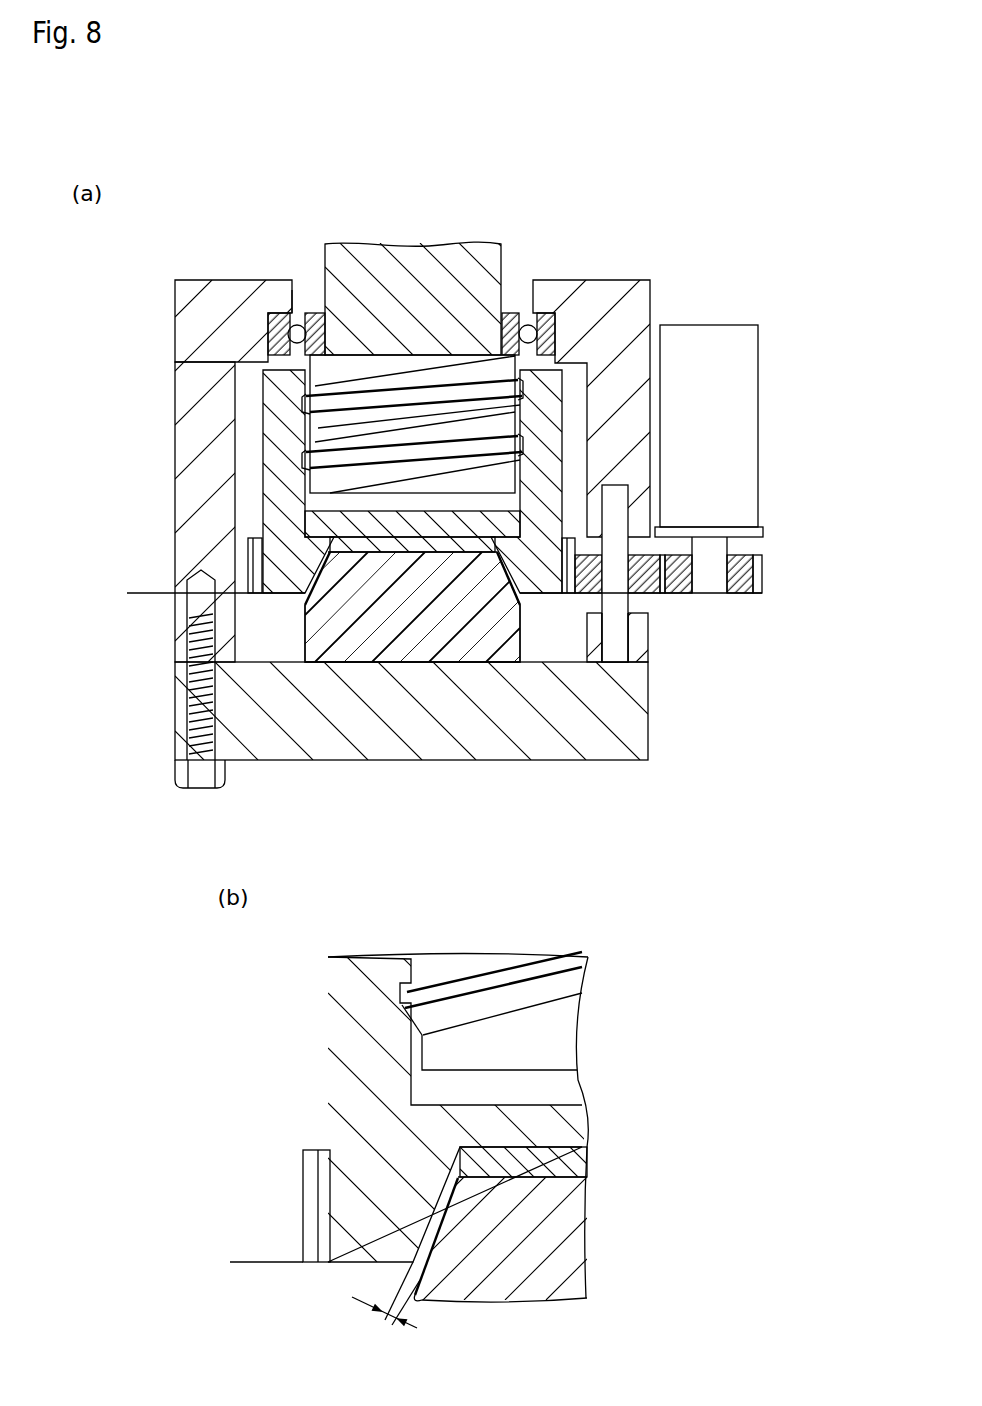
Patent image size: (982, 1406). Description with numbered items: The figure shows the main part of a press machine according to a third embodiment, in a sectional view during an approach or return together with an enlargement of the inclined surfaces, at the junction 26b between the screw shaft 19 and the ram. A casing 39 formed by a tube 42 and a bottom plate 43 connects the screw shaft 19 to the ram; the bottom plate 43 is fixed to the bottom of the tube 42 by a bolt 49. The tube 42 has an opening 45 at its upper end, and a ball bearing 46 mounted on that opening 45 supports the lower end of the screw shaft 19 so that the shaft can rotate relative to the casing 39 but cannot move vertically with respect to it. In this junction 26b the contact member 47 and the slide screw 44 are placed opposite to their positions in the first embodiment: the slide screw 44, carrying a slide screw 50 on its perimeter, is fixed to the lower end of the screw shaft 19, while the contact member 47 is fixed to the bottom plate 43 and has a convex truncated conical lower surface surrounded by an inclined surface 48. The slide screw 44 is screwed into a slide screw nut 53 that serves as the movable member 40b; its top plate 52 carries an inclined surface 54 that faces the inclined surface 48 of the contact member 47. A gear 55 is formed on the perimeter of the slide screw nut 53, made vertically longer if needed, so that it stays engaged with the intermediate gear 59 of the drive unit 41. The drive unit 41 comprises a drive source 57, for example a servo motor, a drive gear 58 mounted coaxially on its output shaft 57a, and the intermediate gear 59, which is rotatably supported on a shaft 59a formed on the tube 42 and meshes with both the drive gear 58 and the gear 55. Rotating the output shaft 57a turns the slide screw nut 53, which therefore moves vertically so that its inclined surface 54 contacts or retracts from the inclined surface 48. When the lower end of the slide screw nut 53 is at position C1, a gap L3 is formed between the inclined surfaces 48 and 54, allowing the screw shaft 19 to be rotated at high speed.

The screw shaft 19 is at (493, 258).
The junction 26b is at (668, 255).
The casing 39 is at (191, 471).
The drive unit 41 is at (749, 431).
The tube 42 is at (182, 435).
The bottom plate 43 is at (285, 752).
The slide screw 44 is at (333, 819).
The opening 45 is at (297, 290).
The ball bearing 46 is at (282, 312).
The contact member 47 is at (340, 647).
The inclined surface 48 is at (517, 590).
The bolt 49 is at (200, 780).
The slide screw 50 is at (313, 467).
The top plate 52 is at (383, 523).
The slide screw nut 53 is at (273, 462).
The inclined surface 54 is at (480, 585).
The gear 55 is at (572, 590).
The drive source 57 is at (728, 435).
The output shaft 57a is at (710, 588).
The drive gear 58 is at (738, 590).
The intermediate gear 59 is at (646, 647).
The shaft 59a is at (613, 653).
The movable member 40b is at (254, 515).
The position C1 is at (147, 593).
The gap L3 is at (379, 1296).